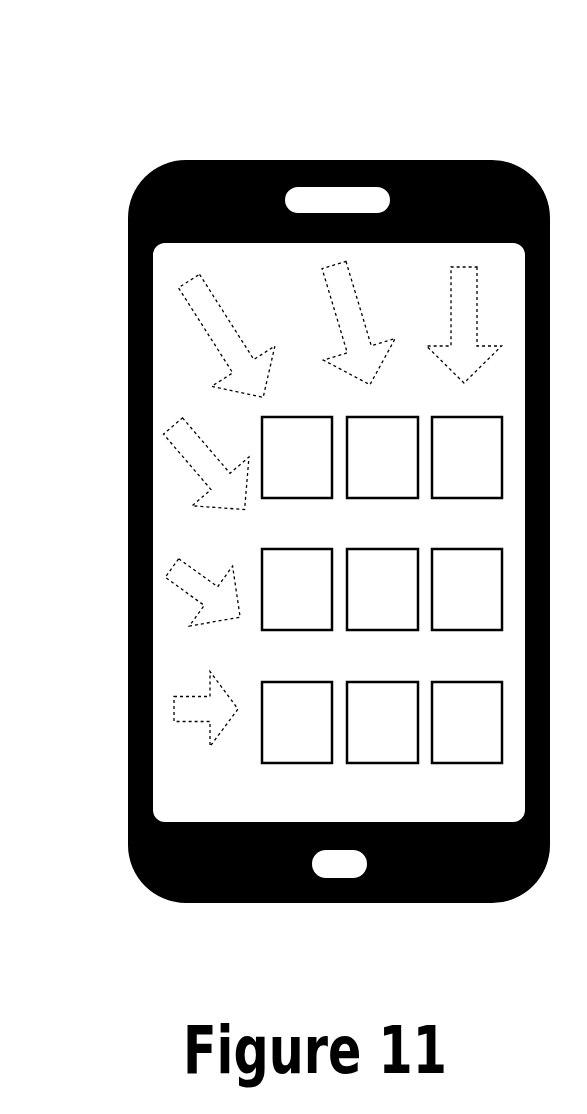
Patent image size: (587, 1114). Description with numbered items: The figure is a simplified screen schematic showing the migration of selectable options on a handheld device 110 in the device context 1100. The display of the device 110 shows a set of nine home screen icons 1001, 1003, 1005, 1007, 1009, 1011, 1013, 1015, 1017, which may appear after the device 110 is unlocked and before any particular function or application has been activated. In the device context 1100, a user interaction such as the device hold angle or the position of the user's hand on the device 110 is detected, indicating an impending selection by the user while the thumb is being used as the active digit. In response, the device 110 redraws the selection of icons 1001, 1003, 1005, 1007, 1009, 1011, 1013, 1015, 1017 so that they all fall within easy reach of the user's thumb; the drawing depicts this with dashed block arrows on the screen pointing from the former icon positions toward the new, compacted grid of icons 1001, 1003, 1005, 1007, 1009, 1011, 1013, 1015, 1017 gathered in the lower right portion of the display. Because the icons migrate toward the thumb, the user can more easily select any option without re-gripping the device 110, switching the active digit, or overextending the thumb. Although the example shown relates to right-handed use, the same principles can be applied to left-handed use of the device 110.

The device 110 is at (372, 162).
The device context 1100 is at (272, 435).
The home screen icon 1001 is at (319, 466).
The home screen icon 1003 is at (404, 466).
The home screen icon 1005 is at (489, 466).
The home screen icon 1007 is at (319, 600).
The home screen icon 1009 is at (404, 600).
The home screen icon 1011 is at (489, 600).
The home screen icon 1013 is at (319, 732).
The home screen icon 1015 is at (404, 732).
The home screen icon 1017 is at (489, 732).